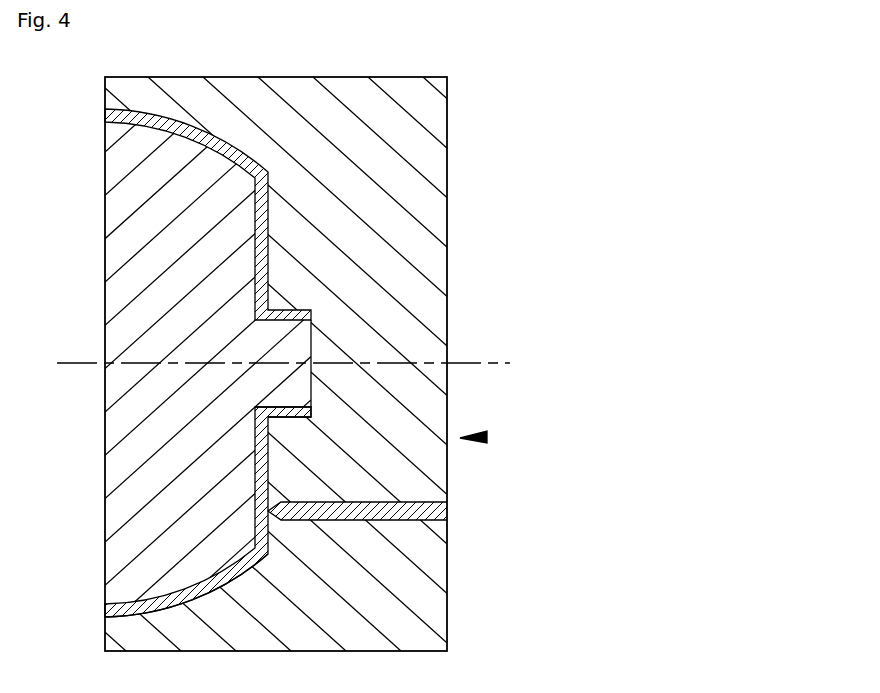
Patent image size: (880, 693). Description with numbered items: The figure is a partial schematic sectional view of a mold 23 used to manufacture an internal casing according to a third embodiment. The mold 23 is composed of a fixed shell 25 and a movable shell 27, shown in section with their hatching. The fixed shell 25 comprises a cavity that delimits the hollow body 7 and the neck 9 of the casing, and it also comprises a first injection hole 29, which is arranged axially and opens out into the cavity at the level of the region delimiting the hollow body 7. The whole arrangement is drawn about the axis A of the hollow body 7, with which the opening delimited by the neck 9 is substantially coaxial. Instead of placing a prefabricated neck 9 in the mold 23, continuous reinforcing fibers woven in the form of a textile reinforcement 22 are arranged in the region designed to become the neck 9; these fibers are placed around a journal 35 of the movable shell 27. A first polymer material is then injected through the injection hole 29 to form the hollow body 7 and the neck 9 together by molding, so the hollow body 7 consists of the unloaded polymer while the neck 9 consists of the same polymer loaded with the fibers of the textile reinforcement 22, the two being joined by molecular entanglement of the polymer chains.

The fixed shell 25 is at (420, 167).
The movable shell 27 is at (118, 251).
The textile reinforcement 22 is at (298, 311).
The journal 35 is at (292, 343).
The neck 9 is at (293, 418).
The hollow body 7 is at (193, 595).
The injection hole 29 is at (430, 511).
The mold 23 is at (485, 437).
The axis A is at (294, 365).